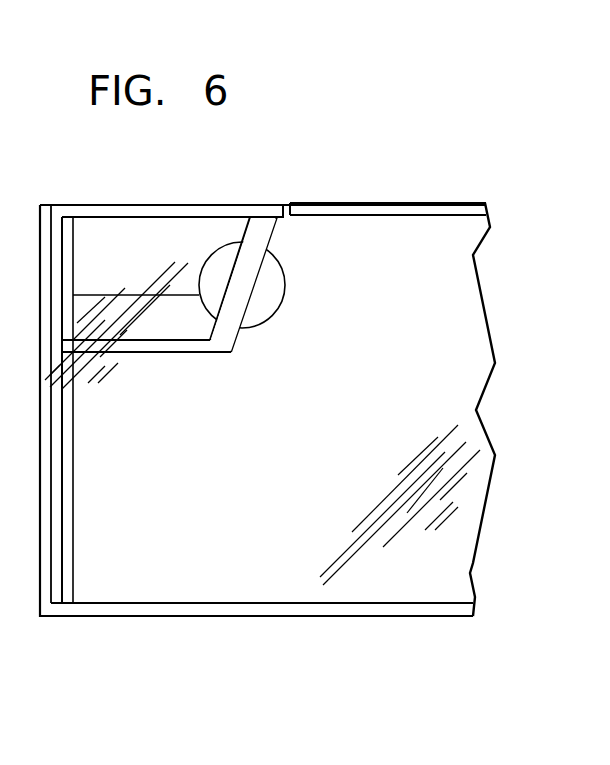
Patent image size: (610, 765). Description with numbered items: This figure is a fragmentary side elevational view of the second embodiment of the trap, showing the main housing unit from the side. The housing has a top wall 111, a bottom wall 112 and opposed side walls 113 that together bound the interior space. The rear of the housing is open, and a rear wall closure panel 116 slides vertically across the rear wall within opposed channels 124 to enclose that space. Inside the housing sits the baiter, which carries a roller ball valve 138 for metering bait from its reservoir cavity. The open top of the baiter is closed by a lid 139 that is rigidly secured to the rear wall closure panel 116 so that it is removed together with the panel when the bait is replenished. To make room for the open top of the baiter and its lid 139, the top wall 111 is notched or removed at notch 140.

The top wall 111 is at (418, 204).
The bottom wall 112 is at (322, 611).
The side wall 113 is at (462, 330).
The rear wall closure panel 116 is at (58, 266).
The channel 124 is at (55, 206).
The roller ball valve 138 is at (272, 284).
The lid 139 is at (186, 210).
The notch 140 is at (283, 206).